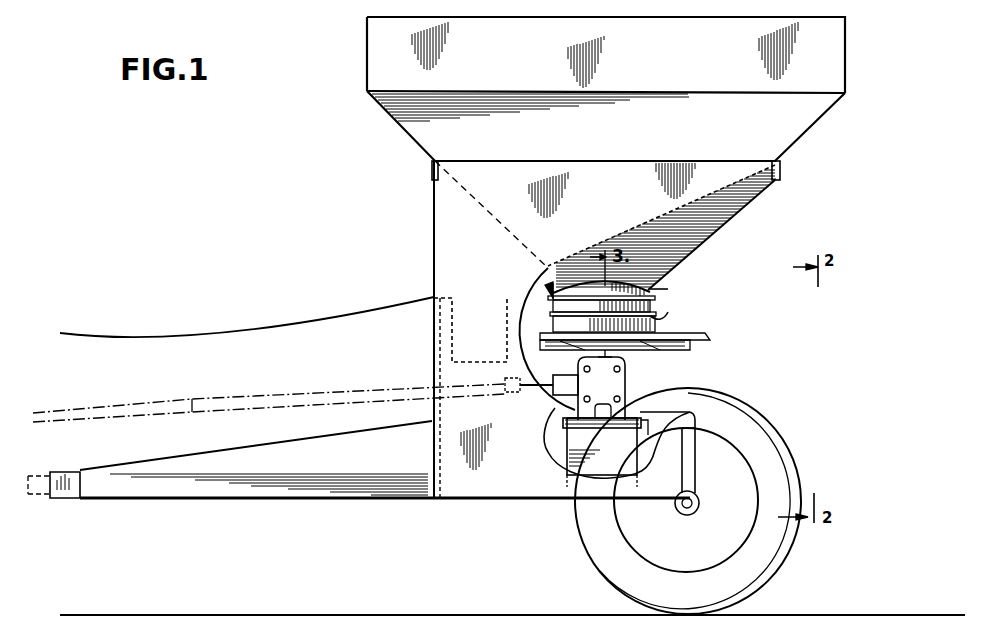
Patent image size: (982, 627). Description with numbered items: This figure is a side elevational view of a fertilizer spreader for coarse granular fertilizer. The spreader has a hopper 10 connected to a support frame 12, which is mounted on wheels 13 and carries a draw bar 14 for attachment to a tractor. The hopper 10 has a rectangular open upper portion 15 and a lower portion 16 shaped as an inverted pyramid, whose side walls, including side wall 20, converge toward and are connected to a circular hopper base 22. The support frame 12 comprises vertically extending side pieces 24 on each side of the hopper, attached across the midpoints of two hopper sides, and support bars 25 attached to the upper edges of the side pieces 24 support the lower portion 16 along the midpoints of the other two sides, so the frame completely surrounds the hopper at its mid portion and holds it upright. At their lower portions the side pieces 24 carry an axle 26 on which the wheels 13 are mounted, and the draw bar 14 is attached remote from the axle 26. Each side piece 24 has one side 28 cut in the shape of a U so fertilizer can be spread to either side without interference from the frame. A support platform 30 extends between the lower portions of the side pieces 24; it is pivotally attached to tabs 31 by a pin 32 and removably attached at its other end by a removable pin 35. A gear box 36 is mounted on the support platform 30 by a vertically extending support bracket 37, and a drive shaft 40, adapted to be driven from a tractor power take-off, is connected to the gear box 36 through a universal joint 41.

The hopper 10 is at (581, 117).
The support frame 12 is at (429, 241).
The wheels 13 is at (597, 548).
The draw bar 14 is at (345, 470).
The rectangular open upper portion 15 is at (702, 60).
The lower portion 16 is at (704, 150).
The side wall 20 is at (625, 309).
The circular hopper base 22 is at (552, 288).
The vertically extending side pieces 24 is at (480, 274).
The support bars 25 is at (432, 171).
The axle 26 is at (698, 507).
The U-shaped side 28 is at (644, 229).
The support platform 30 is at (558, 425).
The tabs 31 is at (670, 290).
The pin 32 is at (671, 316).
The removable pin 35 is at (648, 412).
The gear box 36 is at (566, 372).
The vertically extending support bracket 37 is at (625, 390).
The drive shaft 40 is at (324, 395).
The universal joint 41 is at (516, 392).